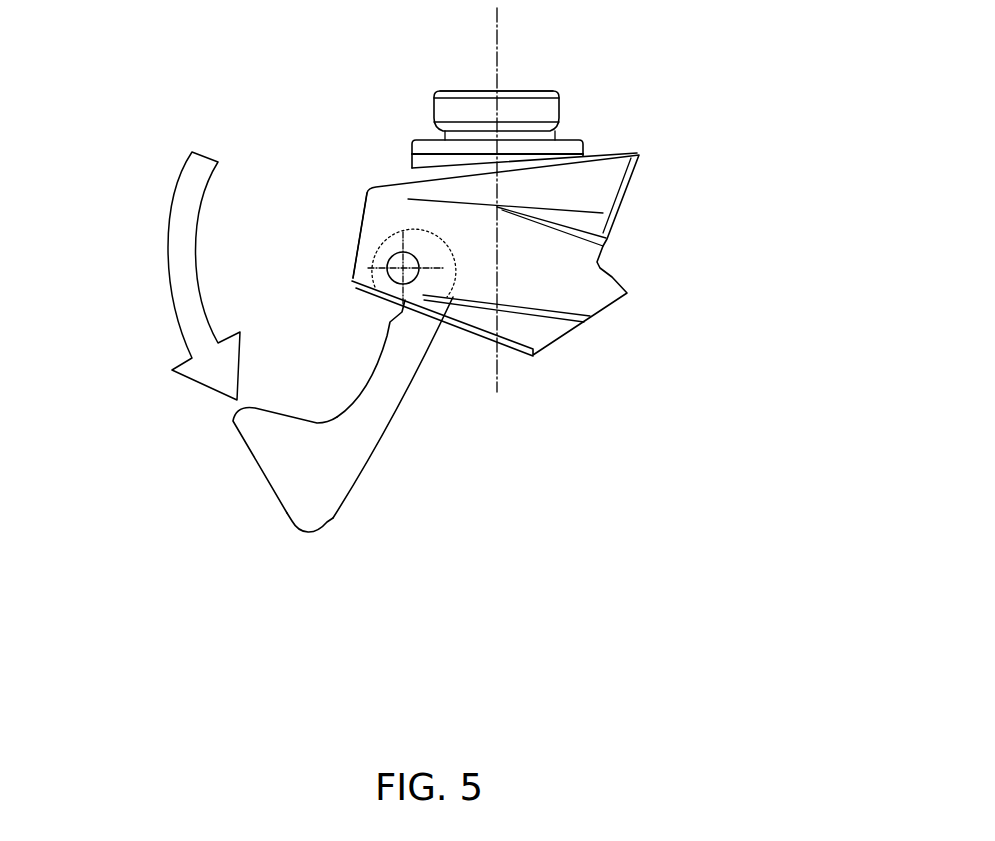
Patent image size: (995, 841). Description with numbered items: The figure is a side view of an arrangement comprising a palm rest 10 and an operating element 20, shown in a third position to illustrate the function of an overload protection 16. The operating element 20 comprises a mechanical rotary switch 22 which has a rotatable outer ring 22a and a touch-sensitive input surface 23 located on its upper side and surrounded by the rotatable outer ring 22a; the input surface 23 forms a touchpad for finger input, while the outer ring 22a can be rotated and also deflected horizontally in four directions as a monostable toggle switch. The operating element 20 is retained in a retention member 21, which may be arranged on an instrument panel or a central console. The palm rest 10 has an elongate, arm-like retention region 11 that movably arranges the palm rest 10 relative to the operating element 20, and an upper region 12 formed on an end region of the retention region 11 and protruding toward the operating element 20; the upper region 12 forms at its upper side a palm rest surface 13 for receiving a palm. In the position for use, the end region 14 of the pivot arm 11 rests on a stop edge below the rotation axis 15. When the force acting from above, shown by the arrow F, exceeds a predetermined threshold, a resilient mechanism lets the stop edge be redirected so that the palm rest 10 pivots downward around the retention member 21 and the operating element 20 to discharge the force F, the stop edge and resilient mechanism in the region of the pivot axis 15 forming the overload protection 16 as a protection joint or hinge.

The palm rest 10 is at (327, 477).
The retention region 11 is at (370, 413).
The upper region 12 is at (288, 498).
The palm rest surface 13 is at (263, 484).
The end region 14 is at (453, 260).
The rotation axis 15 is at (357, 250).
The overload protection 16 is at (364, 273).
The operating element 20 is at (535, 200).
The retention member 21 is at (583, 210).
The mechanical rotary switch 22 is at (540, 106).
The rotatable outer ring 22a is at (561, 106).
The touch-sensitive input surface 23 is at (495, 87).
The force F is at (188, 245).